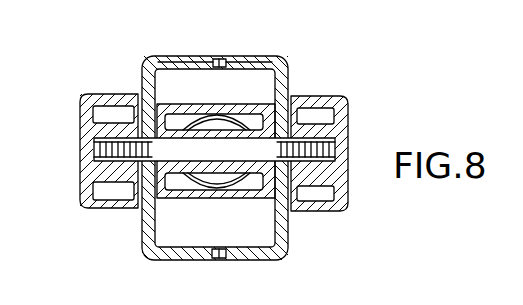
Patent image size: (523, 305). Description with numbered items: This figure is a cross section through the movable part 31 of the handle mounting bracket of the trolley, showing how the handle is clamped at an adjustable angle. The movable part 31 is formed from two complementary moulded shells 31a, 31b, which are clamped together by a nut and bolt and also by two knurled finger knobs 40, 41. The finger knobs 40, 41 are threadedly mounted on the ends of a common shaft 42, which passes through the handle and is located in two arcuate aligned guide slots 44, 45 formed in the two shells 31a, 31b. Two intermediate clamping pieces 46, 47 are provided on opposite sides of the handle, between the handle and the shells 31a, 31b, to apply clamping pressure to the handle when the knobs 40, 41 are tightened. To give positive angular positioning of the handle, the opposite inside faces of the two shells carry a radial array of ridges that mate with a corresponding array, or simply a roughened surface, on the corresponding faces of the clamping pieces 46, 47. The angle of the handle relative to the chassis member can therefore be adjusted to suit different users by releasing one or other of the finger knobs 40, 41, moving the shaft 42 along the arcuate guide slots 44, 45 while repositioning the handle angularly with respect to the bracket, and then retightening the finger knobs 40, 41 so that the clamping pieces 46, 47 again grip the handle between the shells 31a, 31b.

The movable part 31 is at (289, 74).
The moulded shell 31a is at (207, 57).
The moulded shell 31b is at (259, 57).
The knurled finger knob 40 is at (94, 148).
The knurled finger knob 41 is at (352, 123).
The common shaft 42 is at (135, 185).
The arcuate guide slot 44 is at (155, 118).
The arcuate guide slot 45 is at (294, 195).
The intermediate clamping piece 46 is at (188, 198).
The intermediate clamping piece 47 is at (245, 193).